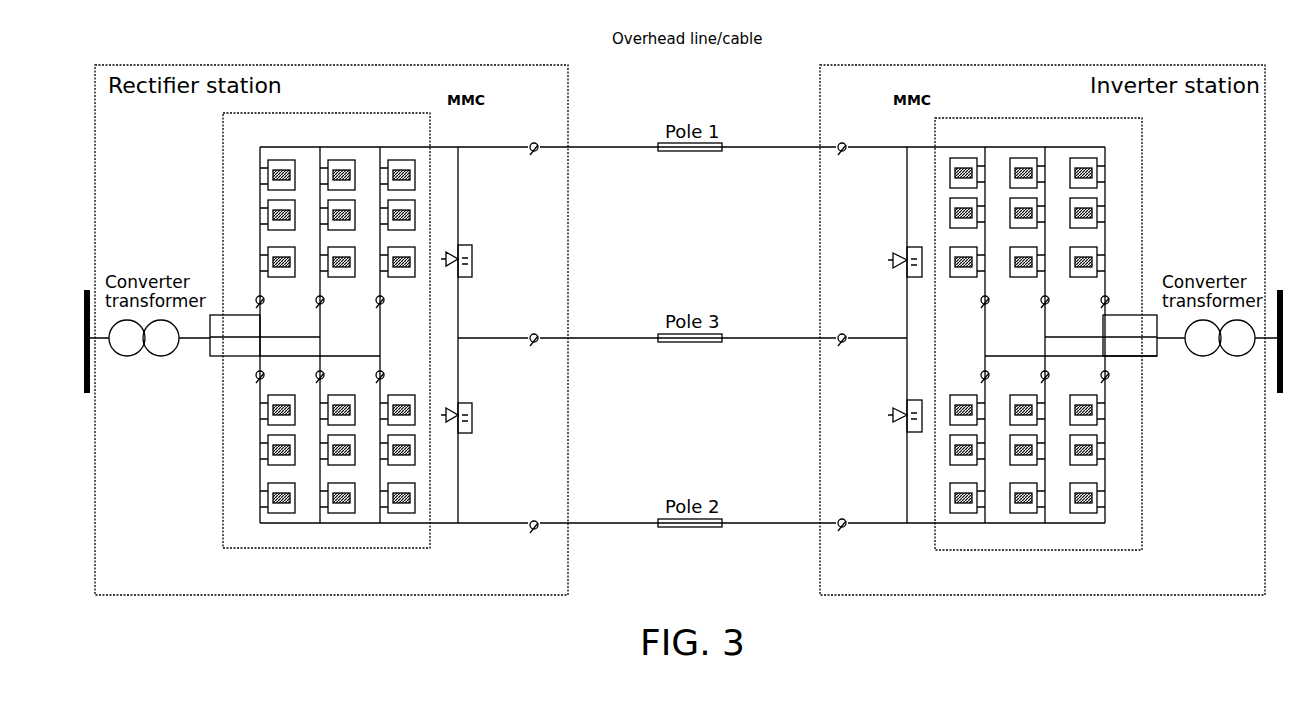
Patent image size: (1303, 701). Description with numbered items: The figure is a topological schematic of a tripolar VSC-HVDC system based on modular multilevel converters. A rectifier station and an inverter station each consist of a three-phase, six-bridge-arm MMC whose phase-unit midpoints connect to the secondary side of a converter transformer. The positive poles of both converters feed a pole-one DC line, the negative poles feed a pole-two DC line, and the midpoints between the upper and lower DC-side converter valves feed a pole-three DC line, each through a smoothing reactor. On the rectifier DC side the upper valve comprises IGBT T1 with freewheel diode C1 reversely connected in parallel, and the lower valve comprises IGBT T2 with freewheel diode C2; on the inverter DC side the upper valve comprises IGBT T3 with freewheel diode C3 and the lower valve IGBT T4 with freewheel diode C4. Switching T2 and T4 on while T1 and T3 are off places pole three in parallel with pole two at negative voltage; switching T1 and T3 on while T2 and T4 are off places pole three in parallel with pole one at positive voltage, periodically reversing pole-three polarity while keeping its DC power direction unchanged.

The freewheel diode C1 is at (477, 261).
The IGBT T1 is at (446, 272).
The freewheel diode C2 is at (476, 412).
The IGBT T2 is at (444, 406).
The freewheel diode C3 is at (920, 254).
The IGBT T3 is at (891, 272).
The freewheel diode C4 is at (920, 406).
The IGBT T4 is at (888, 409).